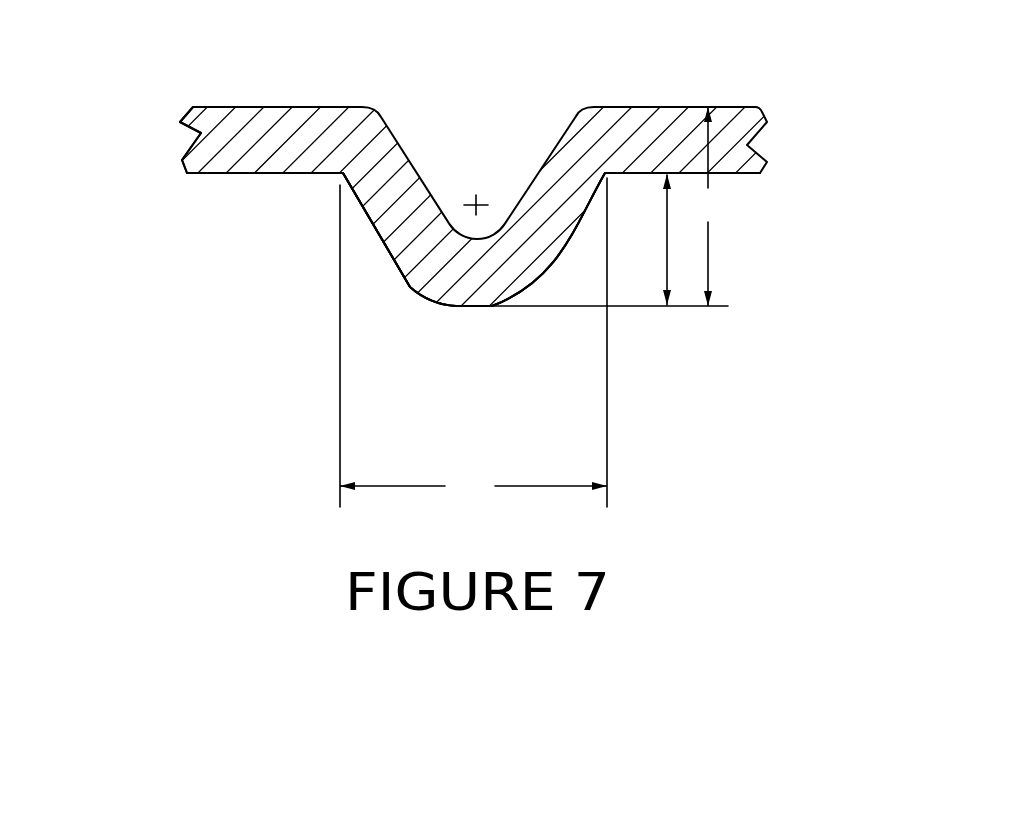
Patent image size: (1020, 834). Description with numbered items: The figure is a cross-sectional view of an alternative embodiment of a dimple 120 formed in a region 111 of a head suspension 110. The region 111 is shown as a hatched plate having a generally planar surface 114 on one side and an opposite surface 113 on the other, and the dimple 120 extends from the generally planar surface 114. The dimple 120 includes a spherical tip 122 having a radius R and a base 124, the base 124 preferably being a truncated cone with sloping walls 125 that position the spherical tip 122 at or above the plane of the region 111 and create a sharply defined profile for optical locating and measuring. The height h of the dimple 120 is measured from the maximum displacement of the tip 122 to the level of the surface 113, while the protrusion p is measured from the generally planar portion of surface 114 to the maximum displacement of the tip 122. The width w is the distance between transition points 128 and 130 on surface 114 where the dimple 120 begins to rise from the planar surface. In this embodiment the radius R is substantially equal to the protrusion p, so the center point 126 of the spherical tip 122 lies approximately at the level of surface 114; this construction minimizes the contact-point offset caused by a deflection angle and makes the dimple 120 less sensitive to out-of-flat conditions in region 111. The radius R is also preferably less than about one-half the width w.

The head suspension 110 is at (613, 106).
The region 111 is at (203, 130).
The surface 113 is at (723, 107).
The generally planar surface 114 is at (747, 174).
The dimple 120 is at (443, 278).
The spherical tip 122 is at (470, 308).
The base 124 is at (383, 197).
The sloping walls 125 is at (372, 226).
The center point 126 is at (483, 198).
The transition point 128 is at (342, 176).
The transition point 130 is at (605, 176).
The radius R is at (408, 290).
The width w is at (473, 342).
The height h is at (599, 206).
The protrusion p is at (667, 240).